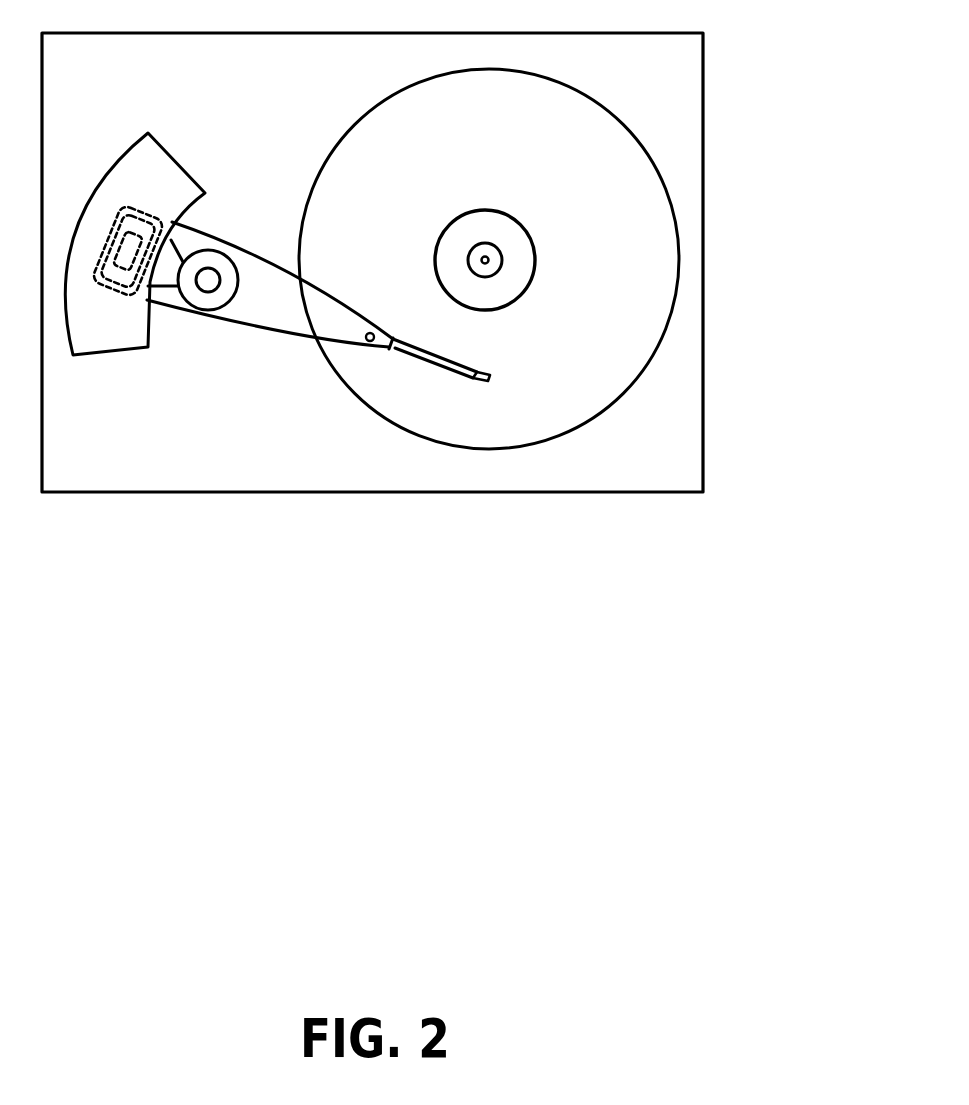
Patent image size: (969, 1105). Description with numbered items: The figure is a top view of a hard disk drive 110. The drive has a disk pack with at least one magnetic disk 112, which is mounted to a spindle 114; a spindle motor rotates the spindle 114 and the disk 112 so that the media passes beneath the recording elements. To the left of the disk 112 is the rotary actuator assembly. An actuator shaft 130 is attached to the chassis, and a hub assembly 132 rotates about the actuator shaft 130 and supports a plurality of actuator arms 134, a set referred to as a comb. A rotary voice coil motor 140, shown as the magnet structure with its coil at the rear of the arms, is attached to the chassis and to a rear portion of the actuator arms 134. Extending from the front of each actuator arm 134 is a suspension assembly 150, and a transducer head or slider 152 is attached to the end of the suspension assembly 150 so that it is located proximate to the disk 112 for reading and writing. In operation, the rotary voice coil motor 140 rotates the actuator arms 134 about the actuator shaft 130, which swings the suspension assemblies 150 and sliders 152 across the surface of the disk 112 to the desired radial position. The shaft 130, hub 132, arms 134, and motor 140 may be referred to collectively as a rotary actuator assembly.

The hard disk drive 110 is at (727, 141).
The magnetic disk 112 is at (500, 137).
The spindle 114 is at (490, 243).
The actuator shaft 130 is at (197, 283).
The hub assembly 132 is at (219, 269).
The actuator arm 134 is at (322, 318).
The rotary voice coil motor 140 is at (150, 177).
The suspension assembly 150 is at (412, 352).
The slider 152 is at (490, 377).